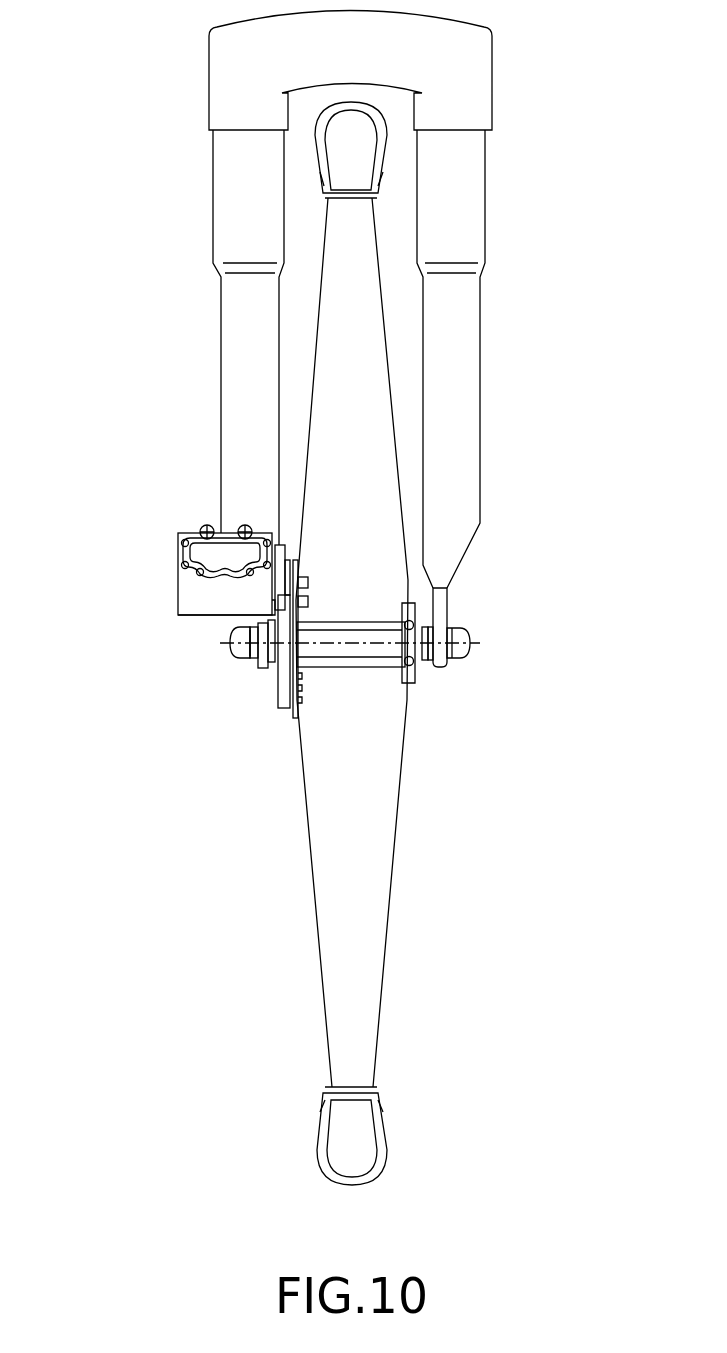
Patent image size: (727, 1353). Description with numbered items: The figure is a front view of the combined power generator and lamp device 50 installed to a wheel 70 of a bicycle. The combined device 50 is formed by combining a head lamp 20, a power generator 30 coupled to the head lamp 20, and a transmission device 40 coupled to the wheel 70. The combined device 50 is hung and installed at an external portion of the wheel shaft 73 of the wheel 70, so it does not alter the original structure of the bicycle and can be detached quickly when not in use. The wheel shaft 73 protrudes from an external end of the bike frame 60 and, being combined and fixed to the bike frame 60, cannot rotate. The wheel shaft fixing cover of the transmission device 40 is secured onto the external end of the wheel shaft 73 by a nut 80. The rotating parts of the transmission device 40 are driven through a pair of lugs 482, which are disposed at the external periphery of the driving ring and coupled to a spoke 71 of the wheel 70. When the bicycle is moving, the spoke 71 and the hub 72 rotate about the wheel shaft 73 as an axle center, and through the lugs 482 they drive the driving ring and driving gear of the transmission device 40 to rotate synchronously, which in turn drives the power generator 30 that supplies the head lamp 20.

The bike frame 60 is at (233, 197).
The spoke 71 is at (308, 435).
The wheel 70 is at (318, 1160).
The hub 72 is at (355, 621).
The wheel shaft 73 is at (353, 643).
The nut 80 is at (242, 650).
The lug 482 is at (320, 598).
The combined power generator and lamp device 50 is at (147, 576).
The head lamp 20 is at (223, 552).
The power generator 30 is at (223, 602).
The transmission device 40 is at (280, 633).